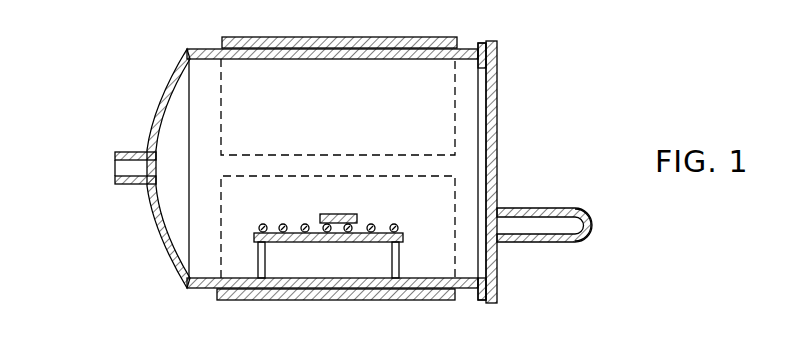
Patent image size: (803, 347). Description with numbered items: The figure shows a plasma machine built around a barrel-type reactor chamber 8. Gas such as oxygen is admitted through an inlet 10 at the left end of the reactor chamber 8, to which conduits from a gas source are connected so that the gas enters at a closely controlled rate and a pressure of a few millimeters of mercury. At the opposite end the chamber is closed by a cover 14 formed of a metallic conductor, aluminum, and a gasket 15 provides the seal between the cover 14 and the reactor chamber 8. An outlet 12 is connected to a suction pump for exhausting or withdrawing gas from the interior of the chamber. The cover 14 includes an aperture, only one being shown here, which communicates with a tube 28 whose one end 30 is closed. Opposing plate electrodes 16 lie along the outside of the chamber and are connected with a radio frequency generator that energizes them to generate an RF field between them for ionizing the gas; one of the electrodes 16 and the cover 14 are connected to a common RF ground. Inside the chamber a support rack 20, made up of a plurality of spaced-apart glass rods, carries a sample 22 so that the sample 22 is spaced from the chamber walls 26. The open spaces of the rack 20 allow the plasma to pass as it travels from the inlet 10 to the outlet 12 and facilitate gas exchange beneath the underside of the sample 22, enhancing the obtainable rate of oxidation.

The reactor chamber 8 is at (357, 58).
The inlet 10 is at (115, 164).
The outlet 12 is at (497, 172).
The cover 14 is at (497, 107).
The gasket 15 is at (481, 45).
The plate electrodes 16 is at (252, 37).
The support rack 20 is at (297, 233).
The sample 22 is at (357, 218).
The chamber walls 26 is at (234, 278).
The tube 28 is at (553, 208).
The closed end 30 is at (592, 225).